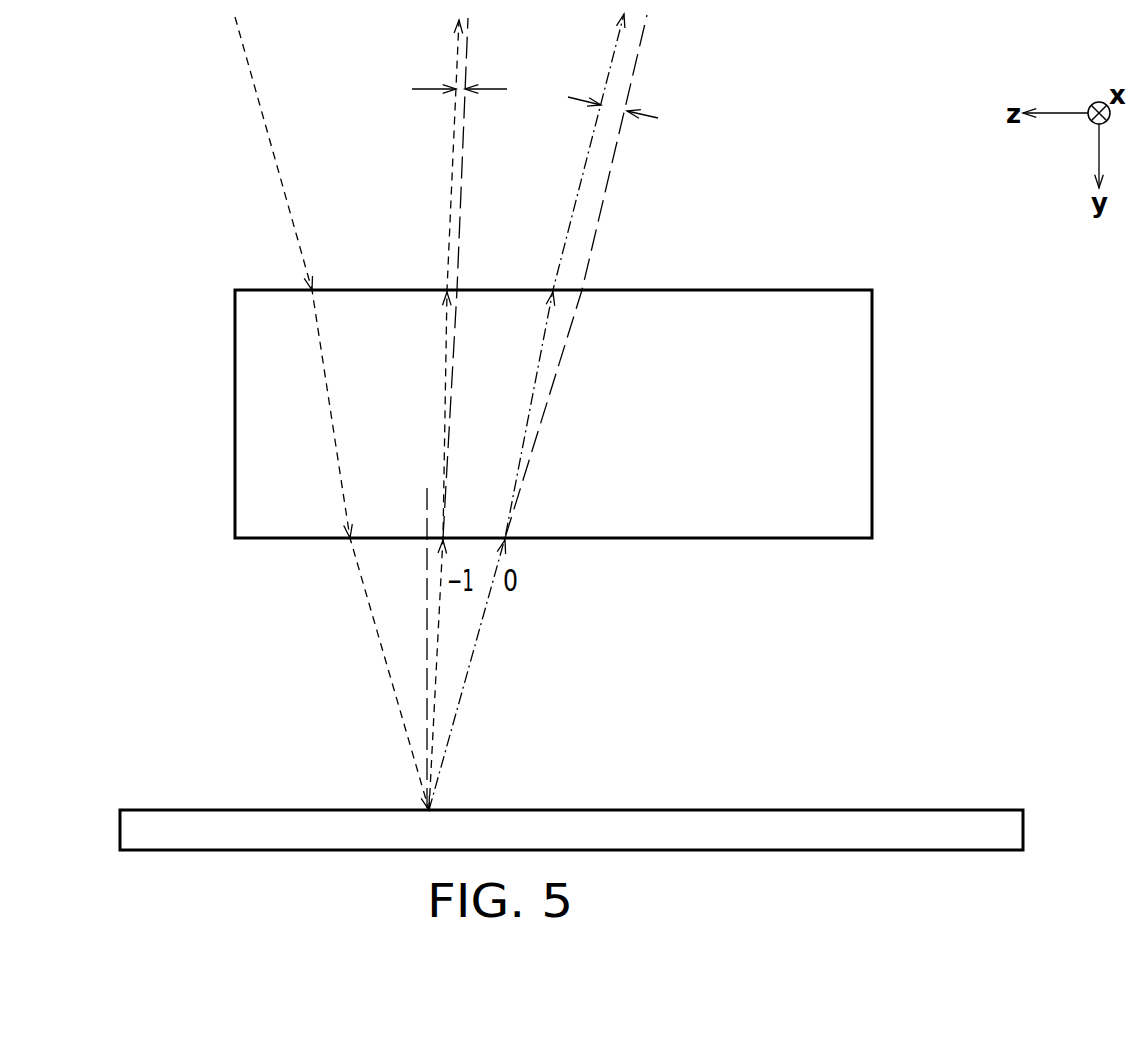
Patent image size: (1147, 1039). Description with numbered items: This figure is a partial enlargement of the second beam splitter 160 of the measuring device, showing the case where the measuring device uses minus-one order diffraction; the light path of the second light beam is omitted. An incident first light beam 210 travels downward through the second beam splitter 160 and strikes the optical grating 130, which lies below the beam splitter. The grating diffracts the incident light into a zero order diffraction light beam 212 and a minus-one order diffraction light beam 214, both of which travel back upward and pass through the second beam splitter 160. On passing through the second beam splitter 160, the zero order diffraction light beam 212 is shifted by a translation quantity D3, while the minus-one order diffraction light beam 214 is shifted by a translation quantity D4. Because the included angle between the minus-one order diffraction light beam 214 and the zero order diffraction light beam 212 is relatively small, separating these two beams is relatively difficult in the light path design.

The optical grating 130 is at (1016, 832).
The second beam splitter 160 is at (872, 410).
The first light beam 210 is at (271, 149).
The zero order diffraction light beam 212 is at (468, 680).
The −1 order diffraction light beam 214 is at (438, 630).
The translation quantity D4 is at (443, 89).
The translation quantity D3 is at (629, 117).